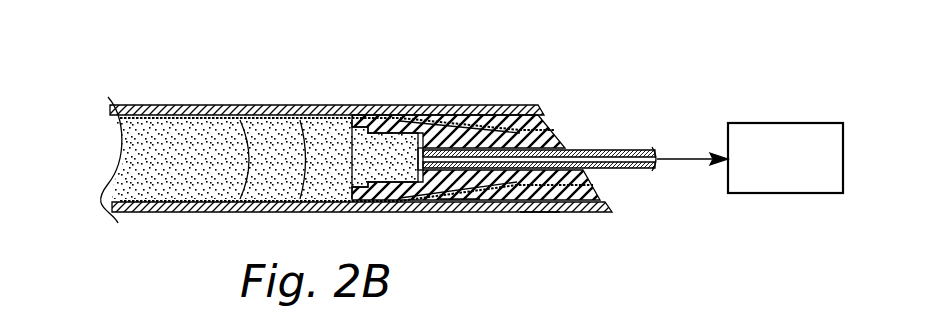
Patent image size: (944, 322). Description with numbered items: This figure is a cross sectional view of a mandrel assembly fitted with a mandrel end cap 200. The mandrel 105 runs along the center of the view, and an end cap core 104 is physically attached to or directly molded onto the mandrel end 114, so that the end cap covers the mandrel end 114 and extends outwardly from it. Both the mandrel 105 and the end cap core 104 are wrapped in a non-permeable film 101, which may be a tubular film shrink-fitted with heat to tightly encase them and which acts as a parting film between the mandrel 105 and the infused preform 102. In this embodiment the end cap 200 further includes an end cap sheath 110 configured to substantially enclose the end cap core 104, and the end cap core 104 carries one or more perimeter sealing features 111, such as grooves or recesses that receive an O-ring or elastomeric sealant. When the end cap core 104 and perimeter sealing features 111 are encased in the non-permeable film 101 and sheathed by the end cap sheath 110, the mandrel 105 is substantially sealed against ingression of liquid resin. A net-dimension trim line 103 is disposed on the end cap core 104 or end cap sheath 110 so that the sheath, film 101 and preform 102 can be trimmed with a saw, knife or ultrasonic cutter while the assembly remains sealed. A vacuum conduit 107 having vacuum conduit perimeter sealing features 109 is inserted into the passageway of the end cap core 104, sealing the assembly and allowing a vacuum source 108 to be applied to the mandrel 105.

The mandrel end cap 200 is at (607, 43).
The non-permeable film 101 is at (222, 108).
The preform 102 is at (278, 110).
The net-dimension trim line 103 is at (580, 120).
The end cap core 104 is at (590, 177).
The mandrel 105 is at (162, 190).
The vacuum conduit 107 is at (602, 150).
The vacuum source 108 is at (782, 123).
The vacuum conduit perimeter sealing feature 109 is at (458, 199).
The end cap sheath 110 is at (560, 118).
The perimeter sealing feature 111 is at (543, 202).
The mandrel end 114 is at (385, 182).